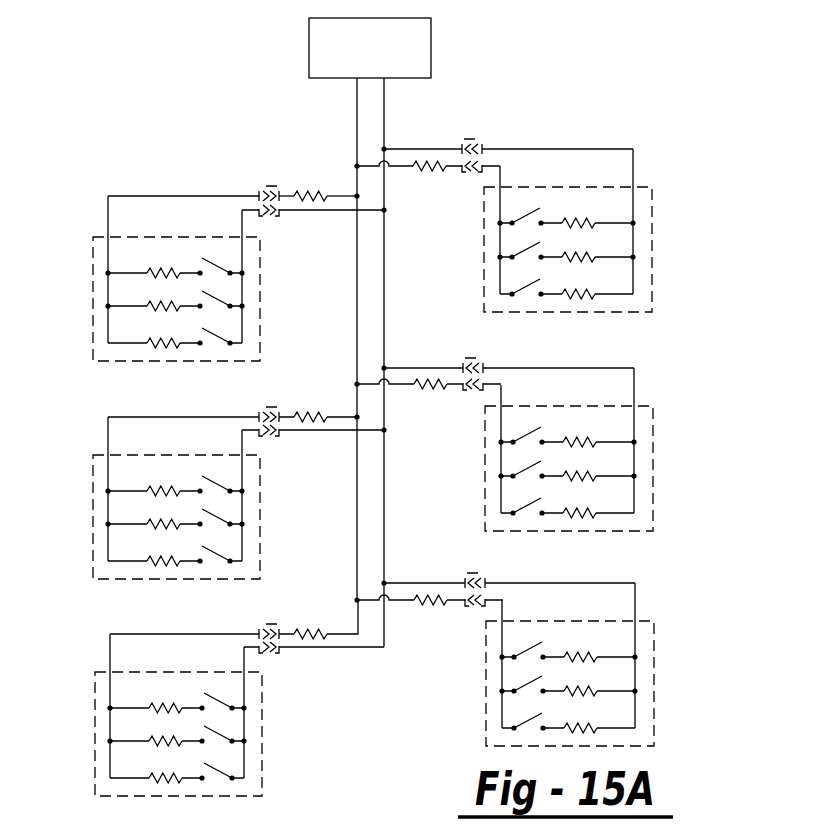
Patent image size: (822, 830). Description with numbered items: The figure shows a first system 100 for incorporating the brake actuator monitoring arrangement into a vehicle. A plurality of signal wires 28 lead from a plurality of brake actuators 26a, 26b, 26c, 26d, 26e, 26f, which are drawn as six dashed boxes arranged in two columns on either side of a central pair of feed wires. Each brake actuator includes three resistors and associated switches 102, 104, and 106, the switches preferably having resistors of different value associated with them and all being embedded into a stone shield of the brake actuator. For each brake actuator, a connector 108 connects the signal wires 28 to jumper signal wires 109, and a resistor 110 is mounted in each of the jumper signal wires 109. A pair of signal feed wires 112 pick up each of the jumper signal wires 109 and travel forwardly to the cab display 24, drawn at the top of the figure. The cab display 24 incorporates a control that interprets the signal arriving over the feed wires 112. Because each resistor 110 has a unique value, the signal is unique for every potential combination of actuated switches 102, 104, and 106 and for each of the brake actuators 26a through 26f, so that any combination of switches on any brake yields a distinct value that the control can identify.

The cab display 24 is at (309, 50).
The brake actuator 26a is at (209, 299).
The brake actuator 26b is at (93, 497).
The brake actuator 26c is at (93, 697).
The brake actuator 26d is at (652, 215).
The brake actuator 26e is at (653, 460).
The brake actuator 26f is at (655, 657).
The signal wires 28 is at (197, 197).
The first system 100 is at (524, 113).
The switch 102 is at (186, 271).
The switch 104 is at (190, 305).
The switch 106 is at (190, 345).
The connector 108 is at (272, 188).
The jumper signal wires 109 is at (338, 194).
The resistor 110 is at (311, 198).
The signal feed wires 112 is at (356, 280).